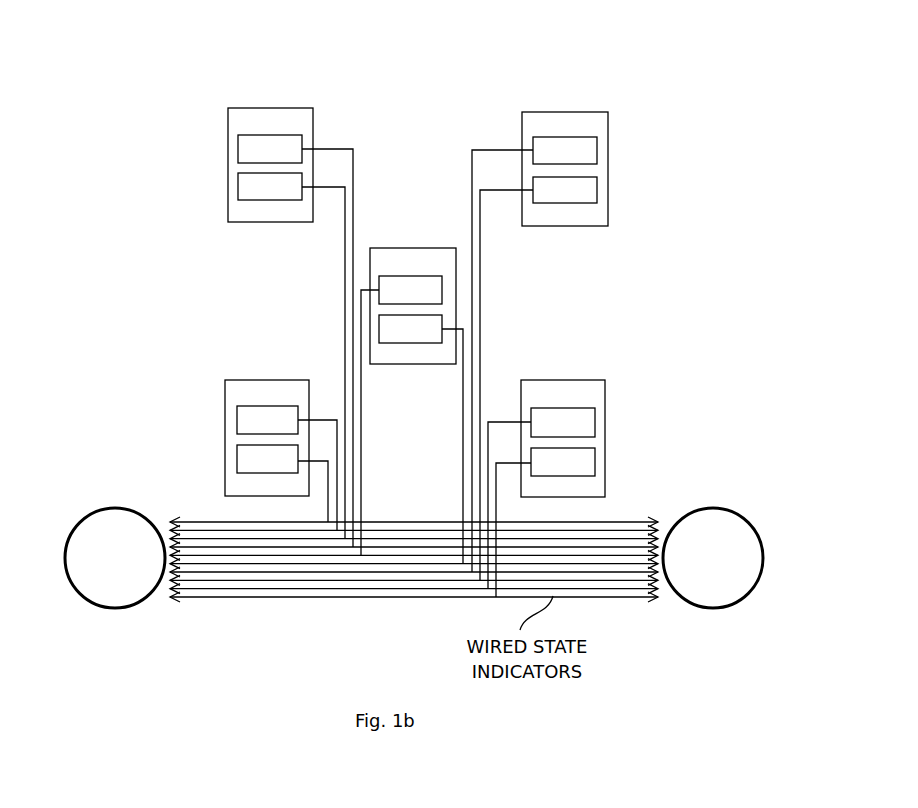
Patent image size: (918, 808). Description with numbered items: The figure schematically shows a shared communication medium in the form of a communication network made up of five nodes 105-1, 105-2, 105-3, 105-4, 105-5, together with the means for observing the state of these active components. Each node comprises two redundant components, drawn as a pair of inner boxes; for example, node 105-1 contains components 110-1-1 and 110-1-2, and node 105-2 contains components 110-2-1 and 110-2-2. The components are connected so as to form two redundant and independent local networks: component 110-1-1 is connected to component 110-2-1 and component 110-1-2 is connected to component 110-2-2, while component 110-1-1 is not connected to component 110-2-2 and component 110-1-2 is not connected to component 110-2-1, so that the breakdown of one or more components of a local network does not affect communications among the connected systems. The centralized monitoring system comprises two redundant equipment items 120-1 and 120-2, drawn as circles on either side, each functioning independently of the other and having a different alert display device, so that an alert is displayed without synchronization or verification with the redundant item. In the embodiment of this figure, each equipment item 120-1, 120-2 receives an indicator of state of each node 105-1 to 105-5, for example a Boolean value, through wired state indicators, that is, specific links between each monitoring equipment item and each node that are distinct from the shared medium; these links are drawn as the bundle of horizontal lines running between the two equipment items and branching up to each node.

The node 105-1 is at (241, 278).
The node 105-2 is at (591, 298).
The node 105-3 is at (275, 380).
The node 105-4 is at (590, 380).
The node 105-5 is at (400, 248).
The redundant component 110-1-1 is at (238, 147).
The redundant component 110-1-2 is at (238, 185).
The redundant component 110-2-1 is at (597, 148).
The redundant component 110-2-2 is at (597, 189).
The equipment item of the centralized monitoring system 120-1 is at (93, 604).
The equipment item of the centralized monitoring system 120-2 is at (717, 606).